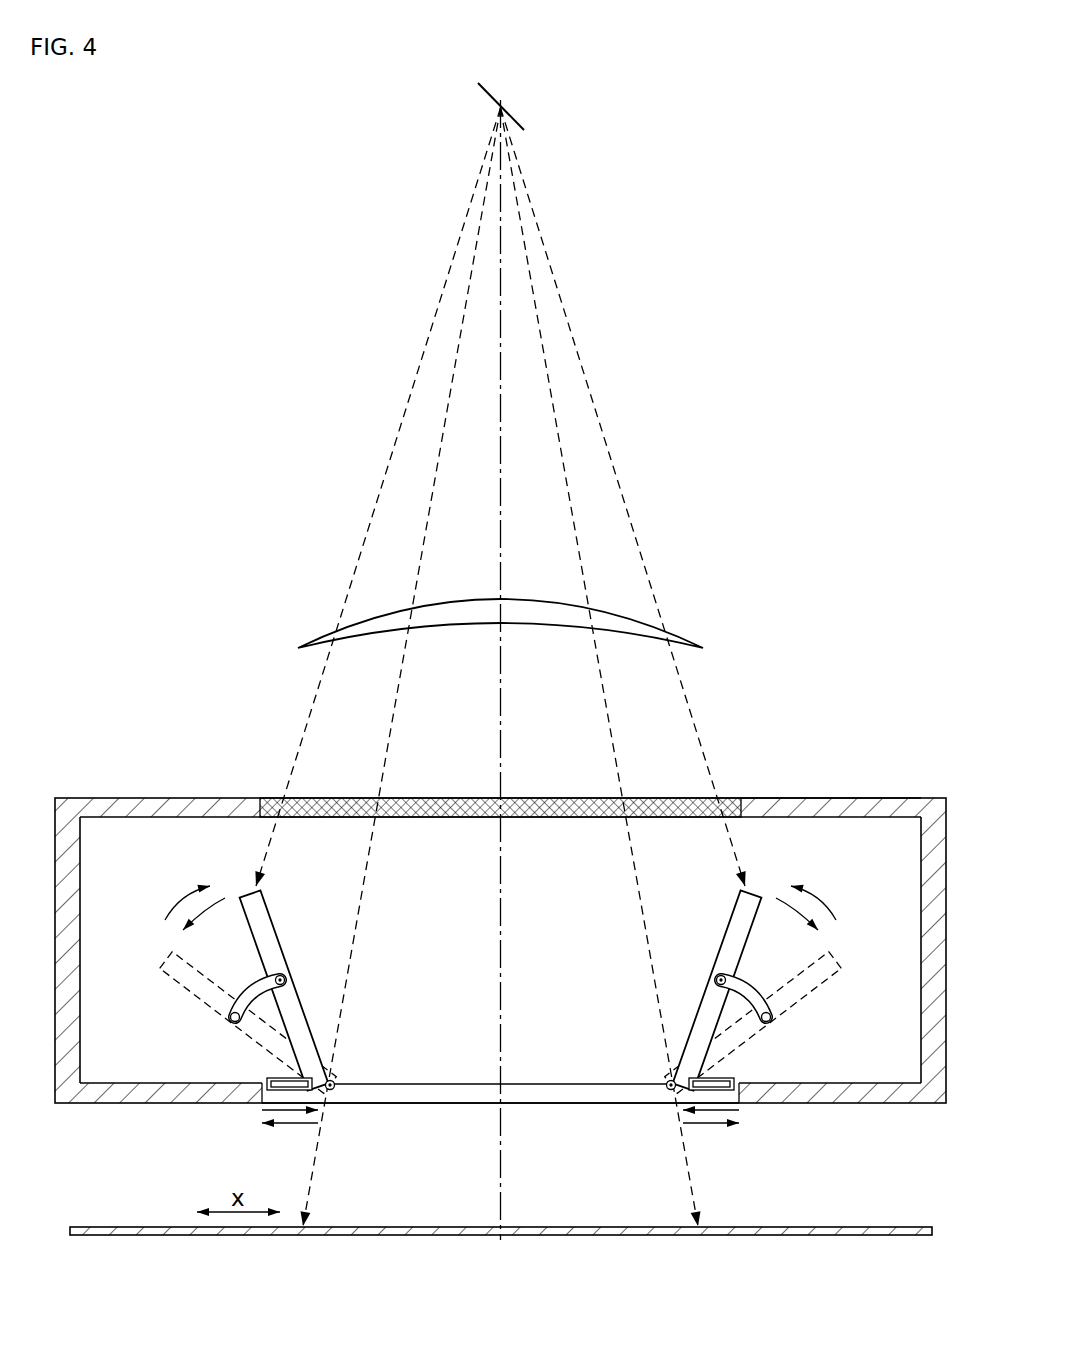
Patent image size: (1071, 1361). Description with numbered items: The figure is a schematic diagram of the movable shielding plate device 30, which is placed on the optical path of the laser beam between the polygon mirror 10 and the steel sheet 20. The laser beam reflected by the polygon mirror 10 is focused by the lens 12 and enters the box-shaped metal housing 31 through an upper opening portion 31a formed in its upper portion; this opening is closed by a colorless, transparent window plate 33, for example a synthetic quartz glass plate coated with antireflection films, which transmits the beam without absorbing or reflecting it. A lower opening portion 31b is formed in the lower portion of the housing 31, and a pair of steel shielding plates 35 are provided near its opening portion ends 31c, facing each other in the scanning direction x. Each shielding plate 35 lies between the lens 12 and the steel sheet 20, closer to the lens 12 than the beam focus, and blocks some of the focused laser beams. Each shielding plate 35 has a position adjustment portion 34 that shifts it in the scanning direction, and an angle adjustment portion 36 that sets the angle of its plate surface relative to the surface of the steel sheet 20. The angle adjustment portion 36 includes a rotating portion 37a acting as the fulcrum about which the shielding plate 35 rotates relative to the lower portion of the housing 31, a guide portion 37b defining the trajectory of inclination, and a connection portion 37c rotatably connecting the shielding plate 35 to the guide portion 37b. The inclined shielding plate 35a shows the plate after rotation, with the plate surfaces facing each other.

The polygon mirror 10 is at (485, 90).
The lens 12 is at (692, 634).
The steel sheet 20 is at (903, 1225).
The movable shielding plate device 30 is at (500, 944).
The housing 31 is at (124, 797).
The upper opening portion 31a is at (727, 797).
The lower opening portion 31b is at (440, 1092).
The opening portion ends 31c is at (250, 1120).
The window plate 33 is at (272, 797).
The position adjustment portion 34 is at (266, 1079).
The shielding plate 35 is at (282, 950).
The inclined shielding plate 35a is at (200, 999).
The angle adjustment portion 36 is at (481, 1004).
The rotating portion 37a is at (335, 1078).
The guide portion 37b is at (250, 993).
The connection portion 37c is at (286, 976).